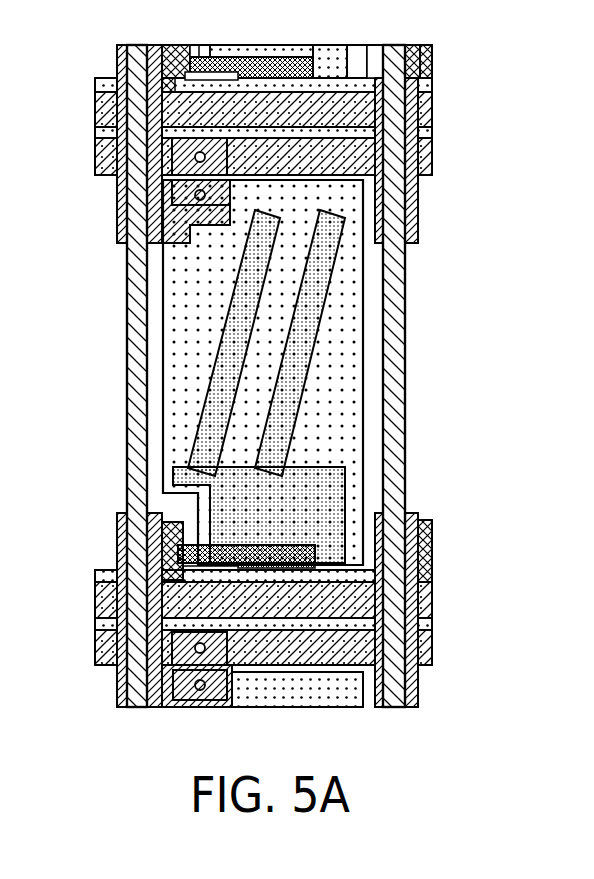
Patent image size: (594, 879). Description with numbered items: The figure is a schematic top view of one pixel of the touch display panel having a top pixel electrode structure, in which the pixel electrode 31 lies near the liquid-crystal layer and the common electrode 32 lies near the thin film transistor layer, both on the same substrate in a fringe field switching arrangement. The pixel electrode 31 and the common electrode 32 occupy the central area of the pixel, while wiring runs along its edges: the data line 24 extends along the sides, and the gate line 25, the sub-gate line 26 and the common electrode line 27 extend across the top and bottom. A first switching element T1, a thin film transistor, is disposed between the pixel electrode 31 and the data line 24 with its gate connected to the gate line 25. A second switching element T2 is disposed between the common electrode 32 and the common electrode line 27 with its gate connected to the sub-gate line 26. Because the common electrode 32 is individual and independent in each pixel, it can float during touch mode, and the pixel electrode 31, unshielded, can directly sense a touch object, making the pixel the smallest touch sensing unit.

The data line 24 is at (393, 295).
The gate line 25 is at (432, 106).
The sub-gate line 26 is at (432, 150).
The common electrode line 27 is at (279, 127).
The pixel electrode 31 is at (280, 425).
The common electrode 32 is at (350, 380).
The first switching element T1 is at (165, 545).
The second switching element T2 is at (163, 186).